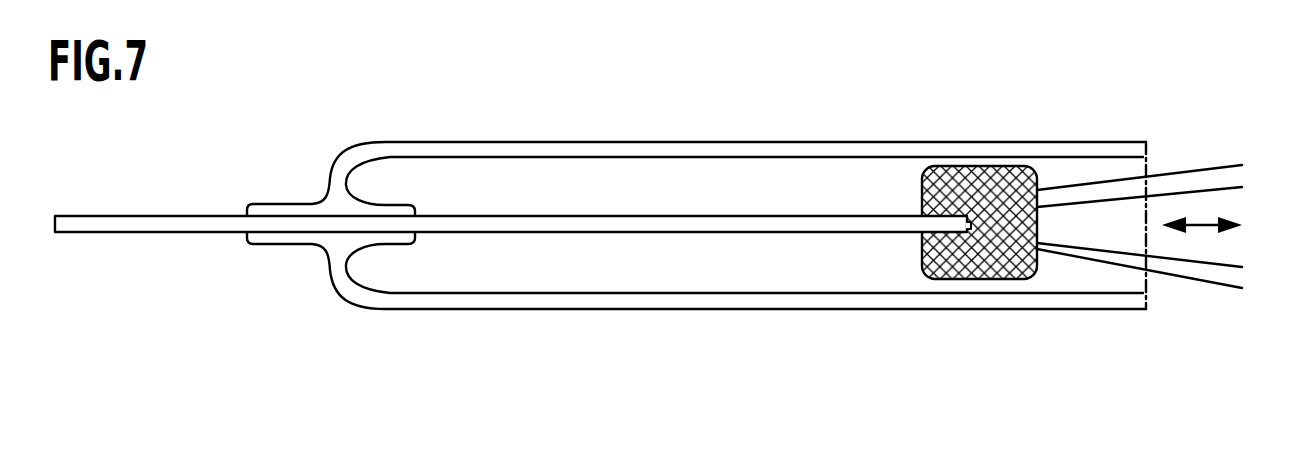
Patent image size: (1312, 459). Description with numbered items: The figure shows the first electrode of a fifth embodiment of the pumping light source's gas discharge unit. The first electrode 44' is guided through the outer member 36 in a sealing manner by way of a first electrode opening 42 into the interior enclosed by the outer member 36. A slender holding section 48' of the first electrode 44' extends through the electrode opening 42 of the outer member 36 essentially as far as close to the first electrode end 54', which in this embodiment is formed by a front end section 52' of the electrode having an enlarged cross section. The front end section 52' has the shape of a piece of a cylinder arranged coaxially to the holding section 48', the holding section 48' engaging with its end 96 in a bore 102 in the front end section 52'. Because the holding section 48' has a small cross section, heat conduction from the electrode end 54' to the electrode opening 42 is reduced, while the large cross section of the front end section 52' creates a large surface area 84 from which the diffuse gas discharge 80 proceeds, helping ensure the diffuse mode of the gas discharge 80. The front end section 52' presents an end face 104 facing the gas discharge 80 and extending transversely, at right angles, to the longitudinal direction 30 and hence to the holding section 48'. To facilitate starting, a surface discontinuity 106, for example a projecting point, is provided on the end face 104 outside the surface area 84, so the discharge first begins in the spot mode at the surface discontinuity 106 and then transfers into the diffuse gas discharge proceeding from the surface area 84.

The longitudinal direction 30 is at (1200, 228).
The outer member 36 is at (675, 300).
The first electrode opening 42 is at (397, 221).
The first electrode 44' is at (643, 124).
The holding section 48' is at (513, 303).
The front end section 52' is at (979, 272).
The first electrode end 54' is at (1118, 154).
The gas discharge 80 is at (1193, 273).
The surface area 84 is at (1037, 192).
The end 96 is at (957, 217).
The bore 102 is at (935, 229).
The end face 104 is at (1038, 247).
The surface discontinuity 106 is at (1038, 260).